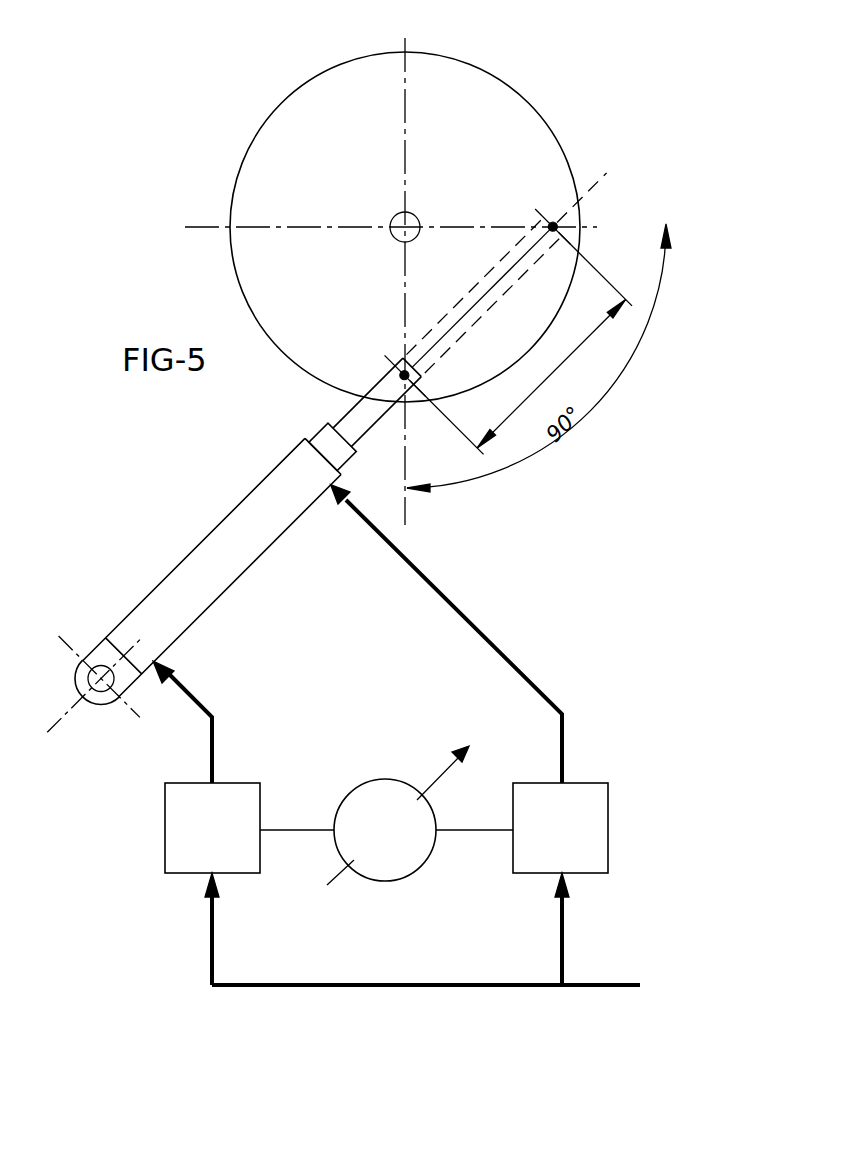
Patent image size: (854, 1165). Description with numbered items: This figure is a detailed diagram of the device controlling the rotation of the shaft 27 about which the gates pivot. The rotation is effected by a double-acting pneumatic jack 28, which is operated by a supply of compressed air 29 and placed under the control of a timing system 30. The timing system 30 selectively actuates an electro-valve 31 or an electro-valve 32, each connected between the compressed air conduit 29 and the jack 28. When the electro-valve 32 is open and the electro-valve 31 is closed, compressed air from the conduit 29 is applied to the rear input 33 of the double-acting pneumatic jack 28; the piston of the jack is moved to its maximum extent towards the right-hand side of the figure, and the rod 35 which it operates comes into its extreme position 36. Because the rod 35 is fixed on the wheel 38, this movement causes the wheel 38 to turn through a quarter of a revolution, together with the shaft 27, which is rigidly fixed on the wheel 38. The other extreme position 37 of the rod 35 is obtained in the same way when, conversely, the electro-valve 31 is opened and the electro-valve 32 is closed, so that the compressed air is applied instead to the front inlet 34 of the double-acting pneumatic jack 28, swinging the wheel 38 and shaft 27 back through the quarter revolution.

The shaft 27 is at (410, 224).
The double-acting pneumatic jack 28 is at (213, 566).
The supply of compressed air 29 is at (600, 987).
The timing system 30 is at (400, 860).
The electro-valve 31 is at (595, 855).
The electro-valve 32 is at (183, 857).
The rear input 33 is at (163, 663).
The front inlet 34 is at (332, 490).
The rod 35 is at (363, 427).
The extreme position 36 is at (556, 226).
The other extreme position 37 is at (404, 378).
The wheel 38 is at (437, 84).